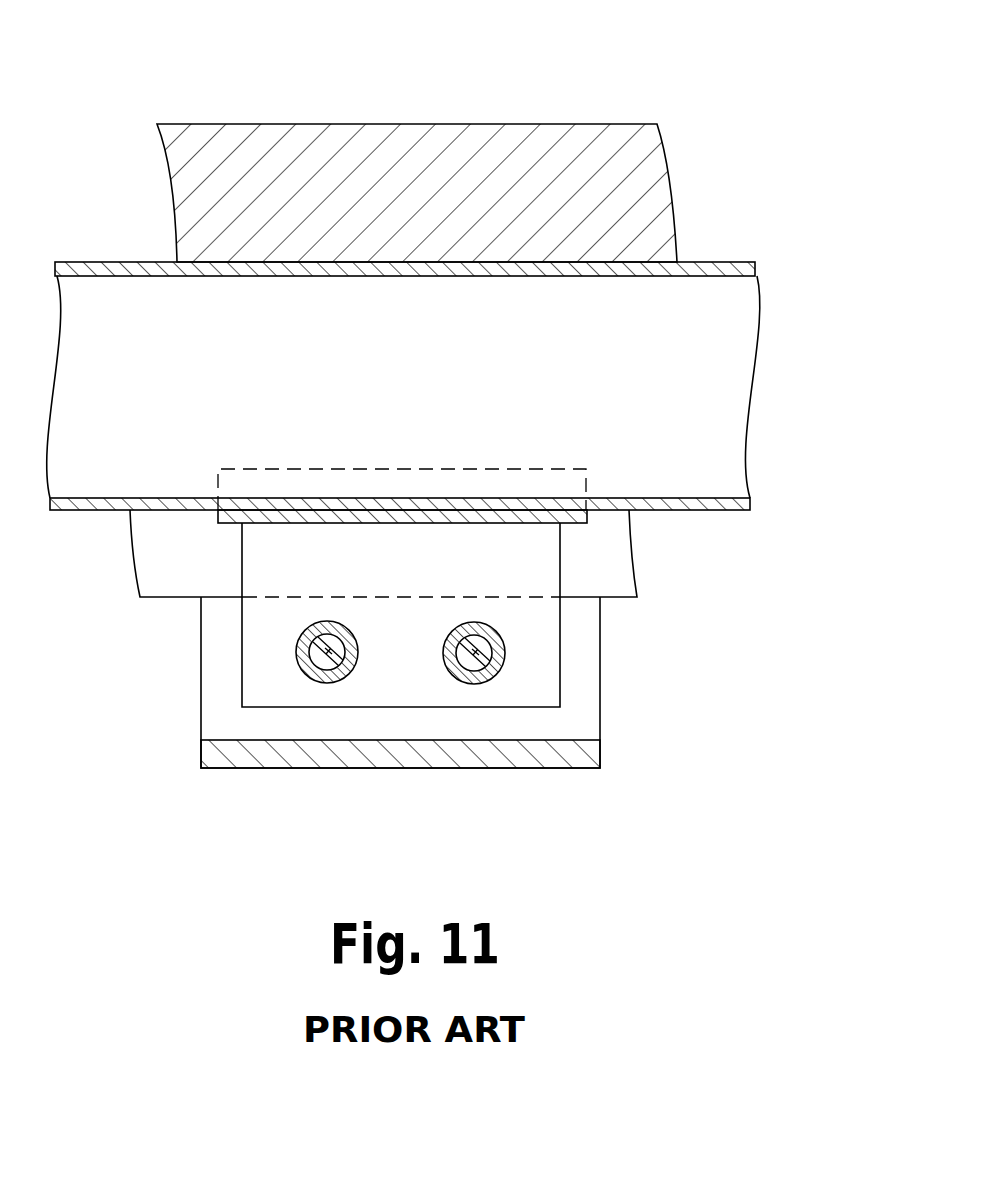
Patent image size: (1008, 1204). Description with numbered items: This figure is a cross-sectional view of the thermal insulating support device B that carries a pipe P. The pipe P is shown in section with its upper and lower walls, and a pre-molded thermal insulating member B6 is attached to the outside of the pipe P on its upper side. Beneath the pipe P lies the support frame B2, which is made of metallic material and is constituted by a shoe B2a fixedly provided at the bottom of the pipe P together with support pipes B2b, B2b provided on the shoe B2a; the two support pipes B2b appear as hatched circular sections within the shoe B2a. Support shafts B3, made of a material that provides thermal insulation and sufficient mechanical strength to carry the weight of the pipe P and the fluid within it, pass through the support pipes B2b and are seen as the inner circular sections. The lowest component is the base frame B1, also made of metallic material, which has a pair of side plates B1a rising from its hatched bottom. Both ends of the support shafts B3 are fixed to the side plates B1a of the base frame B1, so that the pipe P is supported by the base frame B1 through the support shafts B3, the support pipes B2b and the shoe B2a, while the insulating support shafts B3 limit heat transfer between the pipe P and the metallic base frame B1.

The pre-molded thermal insulating member B6 is at (503, 126).
The pipe P is at (762, 383).
The thermal insulating support device B is at (213, 576).
The support frame B2 is at (563, 566).
The shoe B2a is at (252, 623).
The support pipe B2b is at (296, 652).
The support shaft B3 is at (333, 683).
The side plate B1a is at (583, 687).
The base frame B1 is at (602, 742).